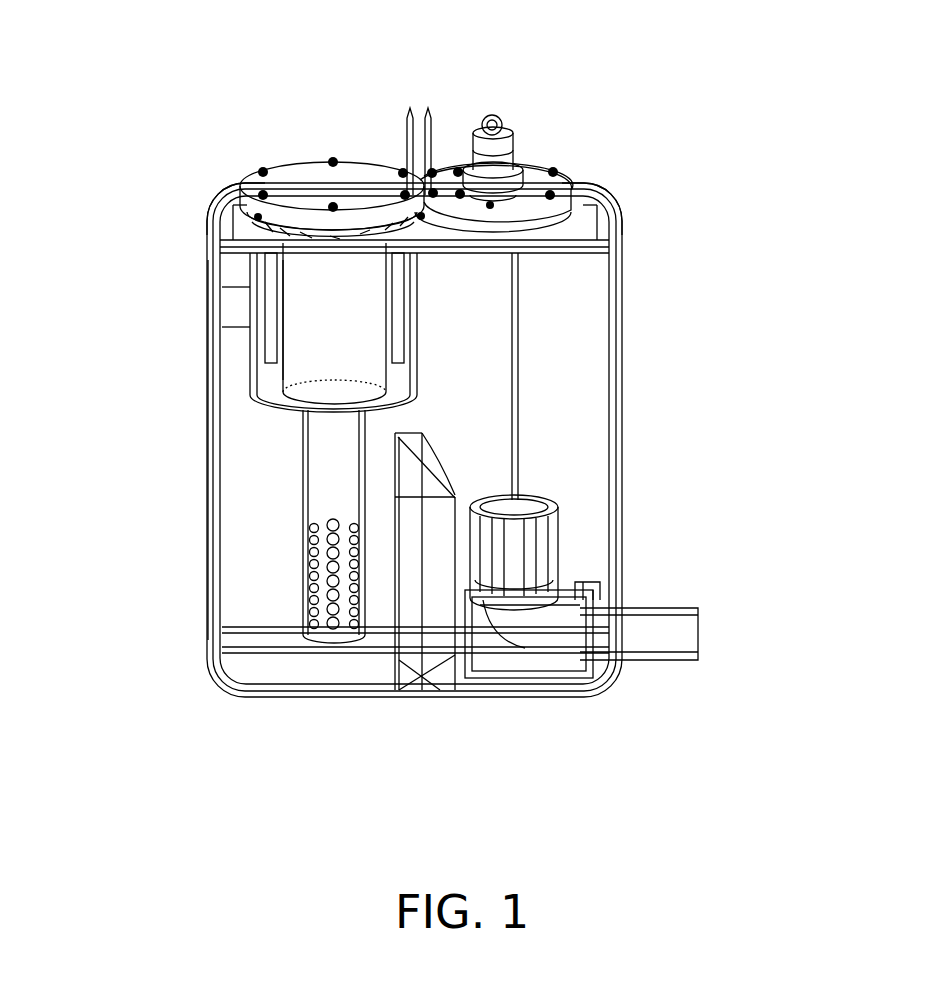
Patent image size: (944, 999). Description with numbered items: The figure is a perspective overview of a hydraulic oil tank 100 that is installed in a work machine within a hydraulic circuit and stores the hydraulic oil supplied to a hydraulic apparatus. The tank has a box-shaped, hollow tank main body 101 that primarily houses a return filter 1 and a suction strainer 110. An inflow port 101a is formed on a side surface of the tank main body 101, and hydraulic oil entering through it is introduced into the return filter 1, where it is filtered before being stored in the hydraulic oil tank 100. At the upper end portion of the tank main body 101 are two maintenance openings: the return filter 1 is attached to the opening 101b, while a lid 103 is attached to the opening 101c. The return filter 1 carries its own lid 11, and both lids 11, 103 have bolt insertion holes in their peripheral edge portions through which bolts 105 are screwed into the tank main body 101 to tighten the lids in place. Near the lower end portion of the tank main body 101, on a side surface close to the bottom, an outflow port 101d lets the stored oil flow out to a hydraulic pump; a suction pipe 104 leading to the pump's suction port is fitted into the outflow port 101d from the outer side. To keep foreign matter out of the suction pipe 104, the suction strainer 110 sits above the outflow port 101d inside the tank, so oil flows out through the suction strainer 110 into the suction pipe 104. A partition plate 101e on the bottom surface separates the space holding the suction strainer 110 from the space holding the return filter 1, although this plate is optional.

The hydraulic oil tank 100 is at (730, 44).
The return filter 1 is at (195, 303).
The lid 11 is at (321, 372).
The tank main body 101 is at (468, 440).
The inflow port 101a is at (168, 450).
The opening 101b is at (190, 201).
The opening 101c is at (652, 195).
The outflow port 101d is at (565, 678).
The partition plate 101e is at (363, 595).
The lid 103 is at (520, 307).
The suction pipe 104 is at (671, 604).
The bolts 105 is at (425, 136).
The suction strainer 110 is at (599, 549).